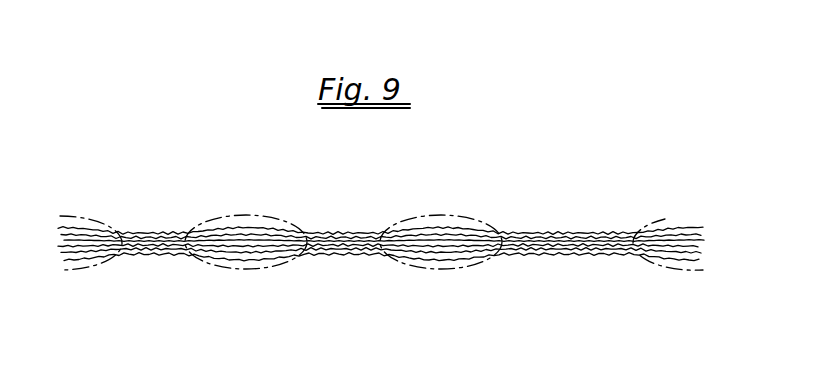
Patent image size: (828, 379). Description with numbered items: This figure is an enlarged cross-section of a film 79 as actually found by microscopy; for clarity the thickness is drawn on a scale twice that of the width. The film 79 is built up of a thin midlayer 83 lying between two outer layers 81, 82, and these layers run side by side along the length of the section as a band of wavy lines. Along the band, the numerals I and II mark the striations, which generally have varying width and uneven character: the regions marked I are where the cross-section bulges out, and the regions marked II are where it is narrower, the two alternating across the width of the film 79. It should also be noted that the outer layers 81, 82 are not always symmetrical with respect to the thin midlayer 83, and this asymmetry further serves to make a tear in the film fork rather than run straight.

The film 79 is at (337, 256).
The outer layer 81 is at (694, 231).
The outer layer 82 is at (701, 262).
The thin midlayer 83 is at (701, 243).
The striation I is at (85, 213).
The striation II is at (152, 233).